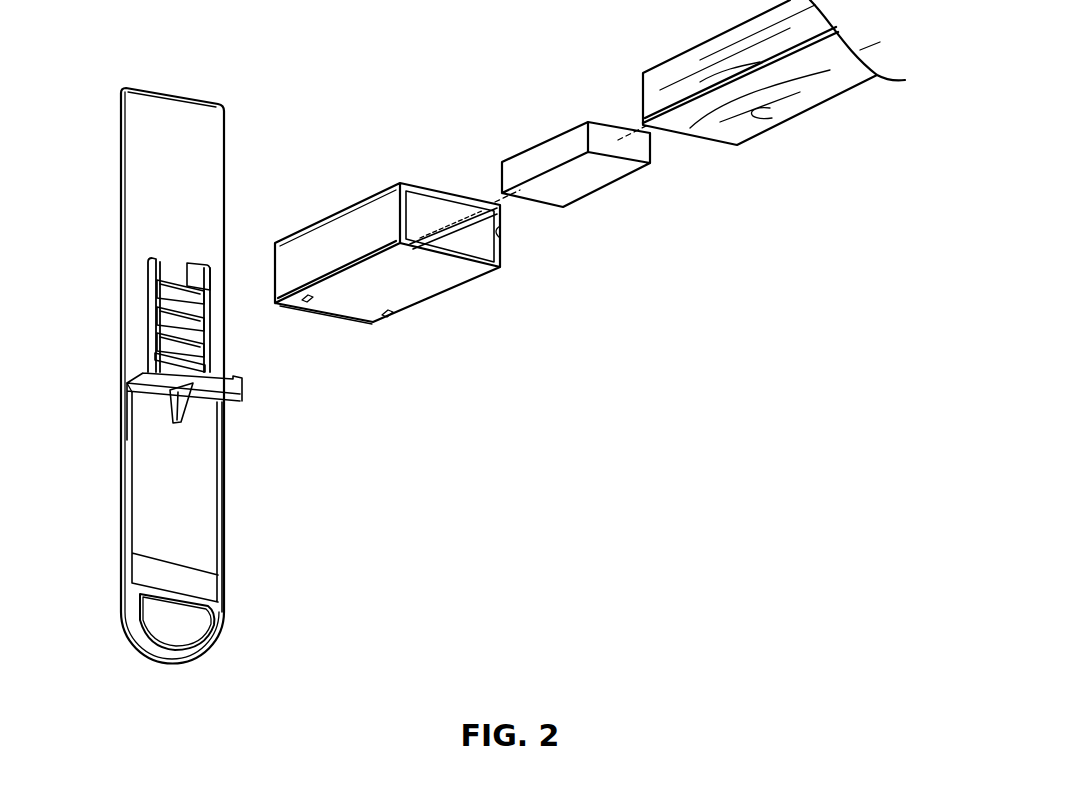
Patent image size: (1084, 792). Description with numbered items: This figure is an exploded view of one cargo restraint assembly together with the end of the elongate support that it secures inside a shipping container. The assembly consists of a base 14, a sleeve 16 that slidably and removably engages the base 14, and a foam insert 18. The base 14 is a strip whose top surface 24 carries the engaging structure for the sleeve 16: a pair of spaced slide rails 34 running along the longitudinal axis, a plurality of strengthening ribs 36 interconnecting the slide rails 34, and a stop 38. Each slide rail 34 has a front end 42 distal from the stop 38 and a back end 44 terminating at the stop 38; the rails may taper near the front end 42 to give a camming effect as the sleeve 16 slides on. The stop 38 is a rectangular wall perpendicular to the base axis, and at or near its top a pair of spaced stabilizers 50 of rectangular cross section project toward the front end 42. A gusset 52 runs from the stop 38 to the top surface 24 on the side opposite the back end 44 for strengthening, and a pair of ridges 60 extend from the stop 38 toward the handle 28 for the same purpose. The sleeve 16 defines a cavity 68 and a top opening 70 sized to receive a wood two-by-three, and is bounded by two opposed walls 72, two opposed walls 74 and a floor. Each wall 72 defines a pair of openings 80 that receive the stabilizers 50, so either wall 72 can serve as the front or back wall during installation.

The base 14 is at (213, 132).
The top surface 24 is at (213, 170).
The front end 42 is at (197, 262).
The strengthening ribs 36 is at (180, 270).
The slide rails 34 is at (152, 305).
The back end 44 is at (210, 373).
The stabilizers 50 is at (150, 372).
The stop 38 is at (153, 383).
The ridges 60 is at (127, 467).
The gusset 52 is at (180, 423).
The handle 28 is at (218, 627).
The sleeve 16 is at (463, 277).
The opposed walls 74 is at (317, 240).
The opposed walls 72 is at (370, 192).
The cavity 68 is at (430, 203).
The openings 80 is at (360, 320).
The top opening 70 is at (500, 237).
The foam insert 18 is at (583, 180).